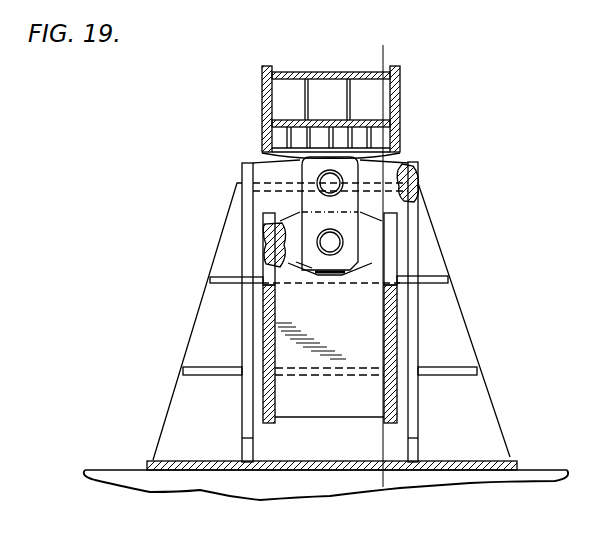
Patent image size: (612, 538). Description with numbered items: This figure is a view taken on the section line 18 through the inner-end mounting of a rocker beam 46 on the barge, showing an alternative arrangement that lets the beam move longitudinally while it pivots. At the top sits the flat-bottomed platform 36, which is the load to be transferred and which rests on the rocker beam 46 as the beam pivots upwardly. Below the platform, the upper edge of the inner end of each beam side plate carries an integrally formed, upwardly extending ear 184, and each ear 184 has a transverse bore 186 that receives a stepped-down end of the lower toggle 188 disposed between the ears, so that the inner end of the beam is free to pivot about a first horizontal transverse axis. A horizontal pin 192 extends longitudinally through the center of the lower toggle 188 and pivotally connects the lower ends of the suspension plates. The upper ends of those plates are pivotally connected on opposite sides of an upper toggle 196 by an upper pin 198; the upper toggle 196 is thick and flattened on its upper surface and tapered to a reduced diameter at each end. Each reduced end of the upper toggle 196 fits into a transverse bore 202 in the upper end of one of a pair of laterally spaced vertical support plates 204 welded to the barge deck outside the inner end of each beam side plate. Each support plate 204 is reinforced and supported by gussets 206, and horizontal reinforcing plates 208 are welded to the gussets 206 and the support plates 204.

The section line 18 is at (365, 487).
The platform 36 is at (400, 98).
The rocker beam 46 is at (393, 404).
The ear 184 is at (390, 223).
The transverse bore 186 is at (268, 248).
The lower toggle 188 is at (298, 265).
The horizontal pin 192 is at (338, 252).
The upper toggle 196 is at (408, 162).
The upper pin 198 is at (318, 182).
The transverse bore 202 is at (421, 180).
The vertical support plate 204 is at (247, 343).
The gusset 206 is at (168, 410).
The horizontal reinforcing plate 208 is at (212, 280).